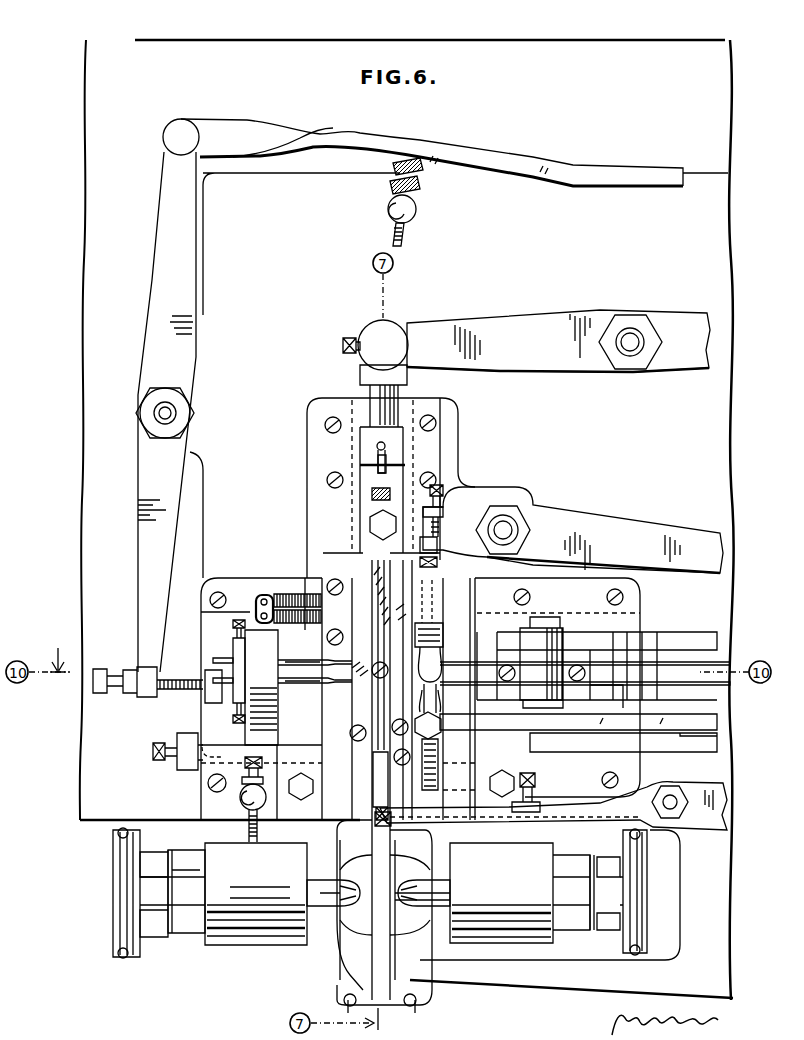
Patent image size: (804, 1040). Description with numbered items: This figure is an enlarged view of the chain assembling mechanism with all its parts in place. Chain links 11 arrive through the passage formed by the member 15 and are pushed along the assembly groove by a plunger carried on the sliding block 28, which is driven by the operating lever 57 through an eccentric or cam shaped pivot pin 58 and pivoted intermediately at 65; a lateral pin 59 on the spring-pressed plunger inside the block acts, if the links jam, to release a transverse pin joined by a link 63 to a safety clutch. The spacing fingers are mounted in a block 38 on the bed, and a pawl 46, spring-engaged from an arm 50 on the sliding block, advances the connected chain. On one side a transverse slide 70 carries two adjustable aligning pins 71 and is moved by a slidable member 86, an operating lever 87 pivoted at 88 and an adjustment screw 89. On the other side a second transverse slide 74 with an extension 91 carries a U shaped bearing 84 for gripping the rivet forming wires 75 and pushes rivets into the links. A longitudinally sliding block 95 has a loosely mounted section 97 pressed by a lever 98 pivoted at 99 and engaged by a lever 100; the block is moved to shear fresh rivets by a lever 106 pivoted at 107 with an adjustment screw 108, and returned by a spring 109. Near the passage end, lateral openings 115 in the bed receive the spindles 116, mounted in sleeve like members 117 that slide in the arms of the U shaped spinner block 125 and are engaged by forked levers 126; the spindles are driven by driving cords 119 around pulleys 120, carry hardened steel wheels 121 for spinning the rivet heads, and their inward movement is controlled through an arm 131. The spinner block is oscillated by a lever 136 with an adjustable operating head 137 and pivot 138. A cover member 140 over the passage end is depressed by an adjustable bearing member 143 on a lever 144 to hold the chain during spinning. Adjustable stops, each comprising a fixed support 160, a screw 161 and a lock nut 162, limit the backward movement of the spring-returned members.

The chain links 11 is at (258, 600).
The member forming a passage 15 is at (266, 595).
The sliding block 28 is at (375, 481).
The block 38 is at (362, 708).
The pawl 46 is at (372, 780).
The arm 50 is at (380, 593).
The operating lever 57 is at (558, 341).
The eccentric or cam shaped pivot pin 58 is at (377, 335).
The lateral pin 59 is at (385, 447).
The link 63 is at (378, 458).
The pivot 65 is at (630, 339).
The slide 70 is at (241, 682).
The aligning pins 71 is at (307, 668).
The second transverse slide 74 is at (610, 697).
The rivet forming wires 75 is at (662, 682).
The U shaped bearing 84 is at (530, 670).
The slidably mounted member 86 is at (483, 156).
The operating lever 87 is at (168, 395).
The pivot 88 is at (157, 414).
The adjustment screw 89 is at (107, 695).
The extension 91 is at (650, 743).
The longitudinally sliding block 95 is at (432, 751).
The loosely mounted section 97 is at (440, 660).
The lever 98 is at (432, 688).
The pivot 99 is at (422, 642).
The lever 100 is at (592, 727).
The lever 106 is at (573, 530).
The pivot 107 is at (520, 532).
The adjustment screw 108 is at (443, 493).
The spring 109 is at (446, 775).
The lateral openings 115 is at (408, 925).
The spindles 116 is at (312, 890).
The sleeve like members 117 is at (186, 866).
The driving cords 119 is at (121, 957).
The pulleys 120 is at (124, 893).
The hardened steel wheels 121 is at (425, 905).
The U shaped spinner block 125 is at (256, 894).
The forked levers 126 is at (153, 938).
The arm 131 is at (571, 914).
The lever 136 is at (714, 816).
The adjustable operating head 137 is at (537, 797).
The pivot 138 is at (674, 797).
The cover member 140 is at (378, 950).
The adjustable bearing member 143 is at (374, 819).
The lever 144 is at (558, 818).
The fixed support 160 is at (416, 212).
The screw 161 is at (393, 229).
The lock nut 162 is at (393, 185).